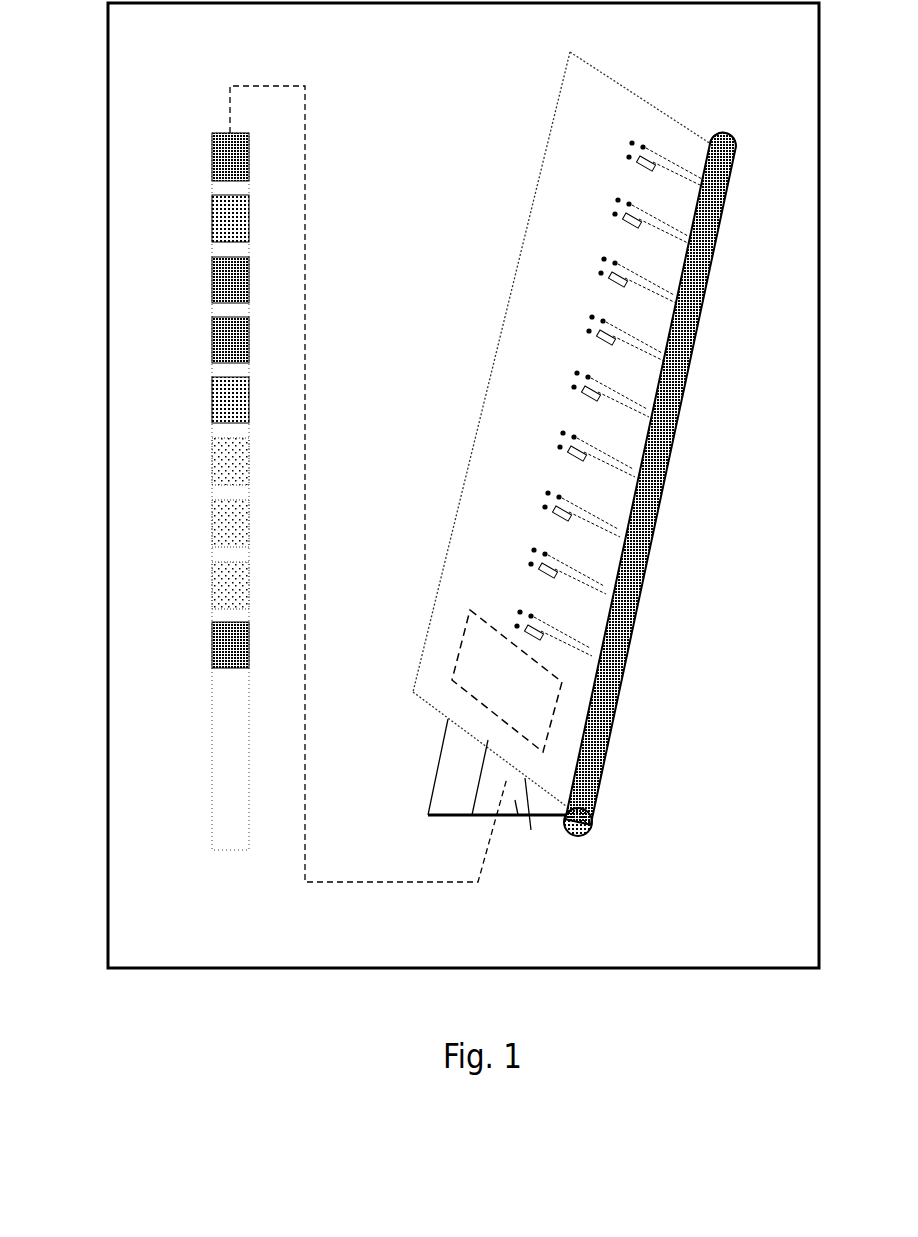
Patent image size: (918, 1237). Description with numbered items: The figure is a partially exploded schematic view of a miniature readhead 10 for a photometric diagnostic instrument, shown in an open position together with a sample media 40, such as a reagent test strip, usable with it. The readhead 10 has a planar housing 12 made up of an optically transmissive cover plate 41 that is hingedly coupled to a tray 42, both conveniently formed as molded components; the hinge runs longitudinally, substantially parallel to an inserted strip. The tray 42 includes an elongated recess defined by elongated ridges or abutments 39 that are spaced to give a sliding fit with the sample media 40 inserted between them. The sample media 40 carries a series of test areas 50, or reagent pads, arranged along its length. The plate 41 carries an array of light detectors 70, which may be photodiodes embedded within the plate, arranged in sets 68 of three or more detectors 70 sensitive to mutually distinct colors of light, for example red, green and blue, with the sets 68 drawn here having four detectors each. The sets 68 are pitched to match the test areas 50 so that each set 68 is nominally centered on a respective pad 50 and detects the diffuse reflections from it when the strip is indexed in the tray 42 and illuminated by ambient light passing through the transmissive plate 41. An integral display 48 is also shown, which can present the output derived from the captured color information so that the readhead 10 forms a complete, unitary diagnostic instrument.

The readhead 10 is at (709, 586).
The housing 12 is at (713, 96).
The elongated ridges or abutments 39 is at (477, 790).
The sample media 40 is at (147, 260).
The cover plate 41 is at (601, 138).
The tray 42 is at (447, 740).
The display 48 is at (557, 718).
The test areas 50 is at (222, 466).
The sets of detectors 68 is at (585, 248).
The light detectors 70 is at (616, 262).